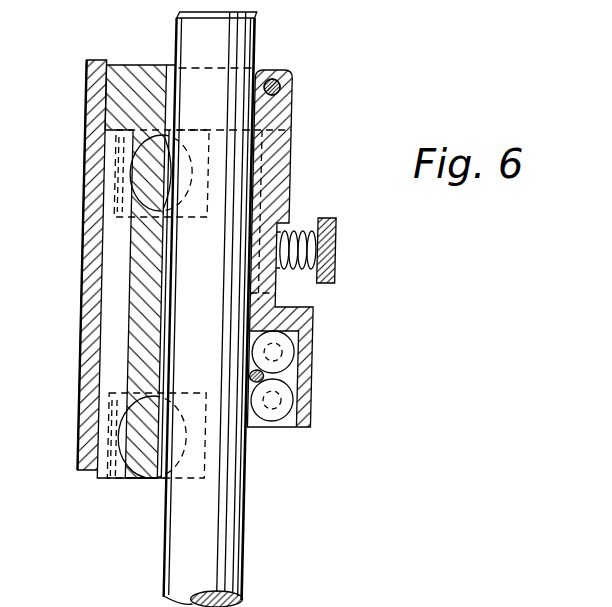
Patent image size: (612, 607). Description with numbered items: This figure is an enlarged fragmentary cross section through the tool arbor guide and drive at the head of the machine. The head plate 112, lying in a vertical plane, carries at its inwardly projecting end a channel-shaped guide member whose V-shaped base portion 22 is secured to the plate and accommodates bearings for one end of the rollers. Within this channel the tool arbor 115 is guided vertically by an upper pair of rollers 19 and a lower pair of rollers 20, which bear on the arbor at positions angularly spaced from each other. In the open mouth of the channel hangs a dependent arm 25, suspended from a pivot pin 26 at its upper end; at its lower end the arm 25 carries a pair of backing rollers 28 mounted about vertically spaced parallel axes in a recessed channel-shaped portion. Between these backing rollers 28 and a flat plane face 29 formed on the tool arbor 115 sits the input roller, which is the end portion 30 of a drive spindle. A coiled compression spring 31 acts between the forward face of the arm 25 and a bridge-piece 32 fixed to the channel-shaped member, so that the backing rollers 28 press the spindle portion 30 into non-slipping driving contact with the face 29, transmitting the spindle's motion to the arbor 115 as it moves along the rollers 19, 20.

The upper pair of rollers 19 is at (112, 172).
The lower pair of rollers 20 is at (108, 421).
The base portion of the channel-shaped member 22 is at (133, 246).
The head plate 112 is at (90, 295).
The tool arbor 115 is at (210, 523).
The dependent arm 25 is at (280, 165).
The pivot pin 26 is at (274, 72).
The backing rollers 28 is at (290, 353).
The flat plane face 29 is at (248, 560).
The end portion of spindle 30 is at (257, 375).
The coiled compression spring 31 is at (297, 269).
The bridge-piece 32 is at (338, 240).